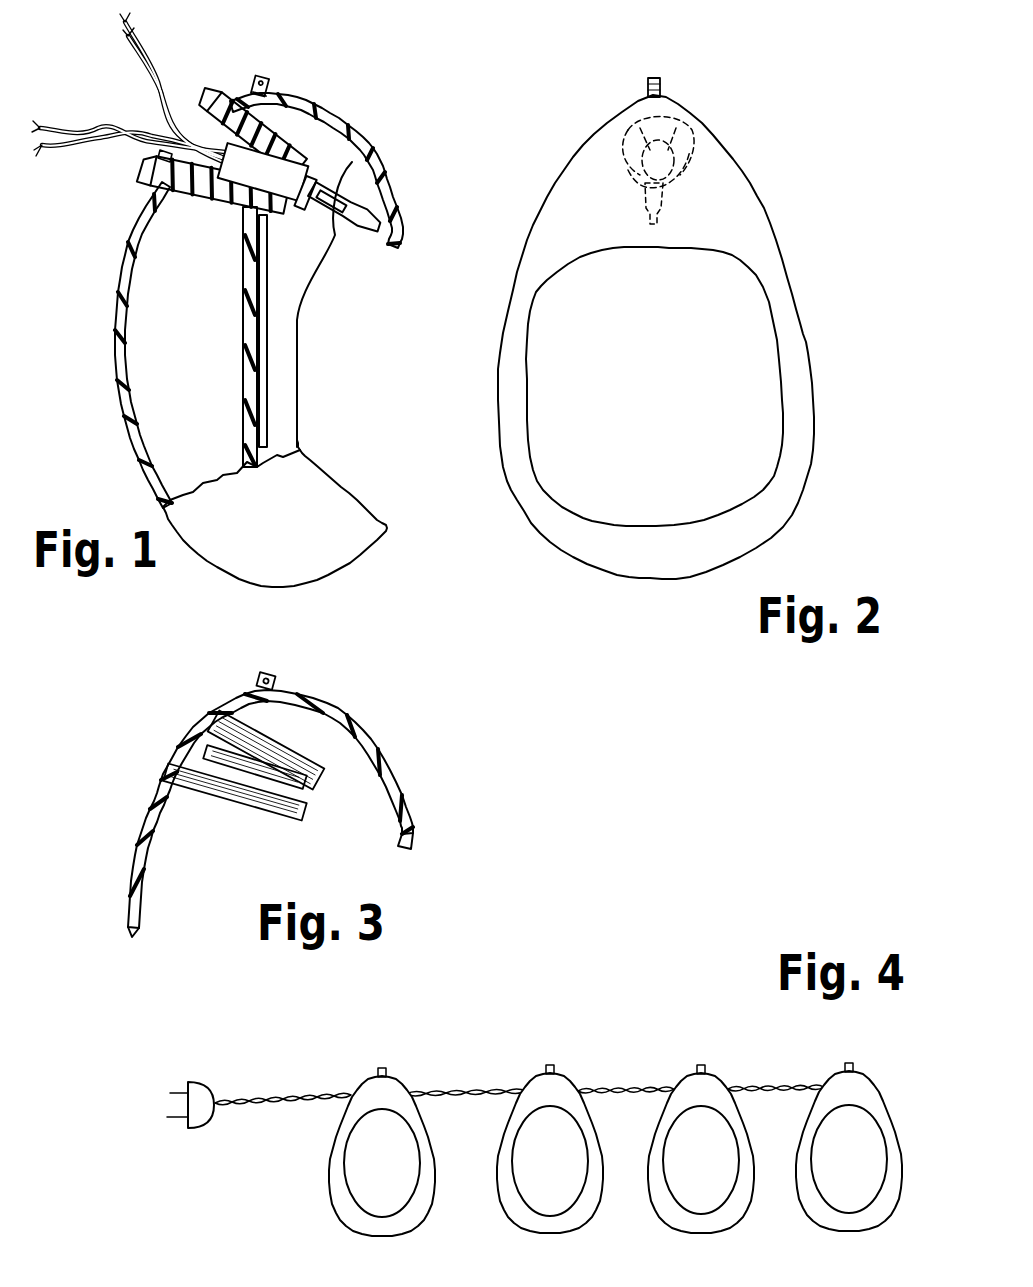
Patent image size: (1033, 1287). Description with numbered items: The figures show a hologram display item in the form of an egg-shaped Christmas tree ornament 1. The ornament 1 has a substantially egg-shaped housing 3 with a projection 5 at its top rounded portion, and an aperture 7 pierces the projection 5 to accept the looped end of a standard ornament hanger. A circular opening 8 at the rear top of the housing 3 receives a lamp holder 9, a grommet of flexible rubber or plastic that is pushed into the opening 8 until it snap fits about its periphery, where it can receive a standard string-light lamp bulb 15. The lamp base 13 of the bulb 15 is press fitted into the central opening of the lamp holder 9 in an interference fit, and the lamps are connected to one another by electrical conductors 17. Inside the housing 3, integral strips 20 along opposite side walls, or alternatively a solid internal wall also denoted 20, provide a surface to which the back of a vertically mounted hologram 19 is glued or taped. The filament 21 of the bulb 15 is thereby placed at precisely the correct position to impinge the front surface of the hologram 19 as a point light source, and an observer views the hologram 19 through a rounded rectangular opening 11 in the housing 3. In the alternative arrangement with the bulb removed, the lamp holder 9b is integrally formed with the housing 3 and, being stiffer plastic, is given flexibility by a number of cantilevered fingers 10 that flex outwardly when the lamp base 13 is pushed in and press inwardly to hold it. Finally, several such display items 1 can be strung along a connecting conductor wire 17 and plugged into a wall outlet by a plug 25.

In FIG. 1, the Christmas tree ornament 1 is at (402, 119).
In FIG. 2, the Christmas tree ornament 1 is at (762, 138).
In FIG. 4, the Christmas tree ornament 1 is at (390, 1078).
In FIG. 1, the egg-shaped housing 3 is at (400, 187).
In FIG. 3, the egg-shaped housing 3 is at (385, 747).
In FIG. 1, the projection 5 is at (268, 80).
In FIG. 2, the projection 5 is at (662, 78).
In FIG. 3, the projection 5 is at (274, 680).
In FIG. 1, the aperture 7 is at (253, 87).
In FIG. 2, the aperture 7 is at (647, 85).
In FIG. 3, the aperture 7 is at (278, 685).
In FIG. 1, the circular opening 8 is at (162, 157).
In FIG. 1, the lamp holder 9 is at (183, 194).
In FIG. 2, the lamp holder 9 is at (613, 150).
In FIG. 3, the lamp holder 9b is at (250, 737).
In FIG. 3, the cantilevered fingers 10 is at (300, 755).
In FIG. 1, the opening 11 is at (348, 342).
In FIG. 2, the opening 11 is at (662, 418).
In FIG. 1, the lamp base 13 is at (283, 173).
In FIG. 1, the lamp bulb 15 is at (350, 170).
In FIG. 2, the lamp bulb 15 is at (667, 200).
In FIG. 1, the electrical conductors 17 is at (155, 88).
In FIG. 4, the electrical conductors 17 is at (462, 1090).
In FIG. 1, the hologram 19 is at (272, 387).
In FIG. 2, the hologram 19 is at (765, 330).
In FIG. 1, the integral strips 20 is at (247, 358).
In FIG. 1, the filament 21 is at (387, 234).
In FIG. 4, the plug 25 is at (203, 1083).